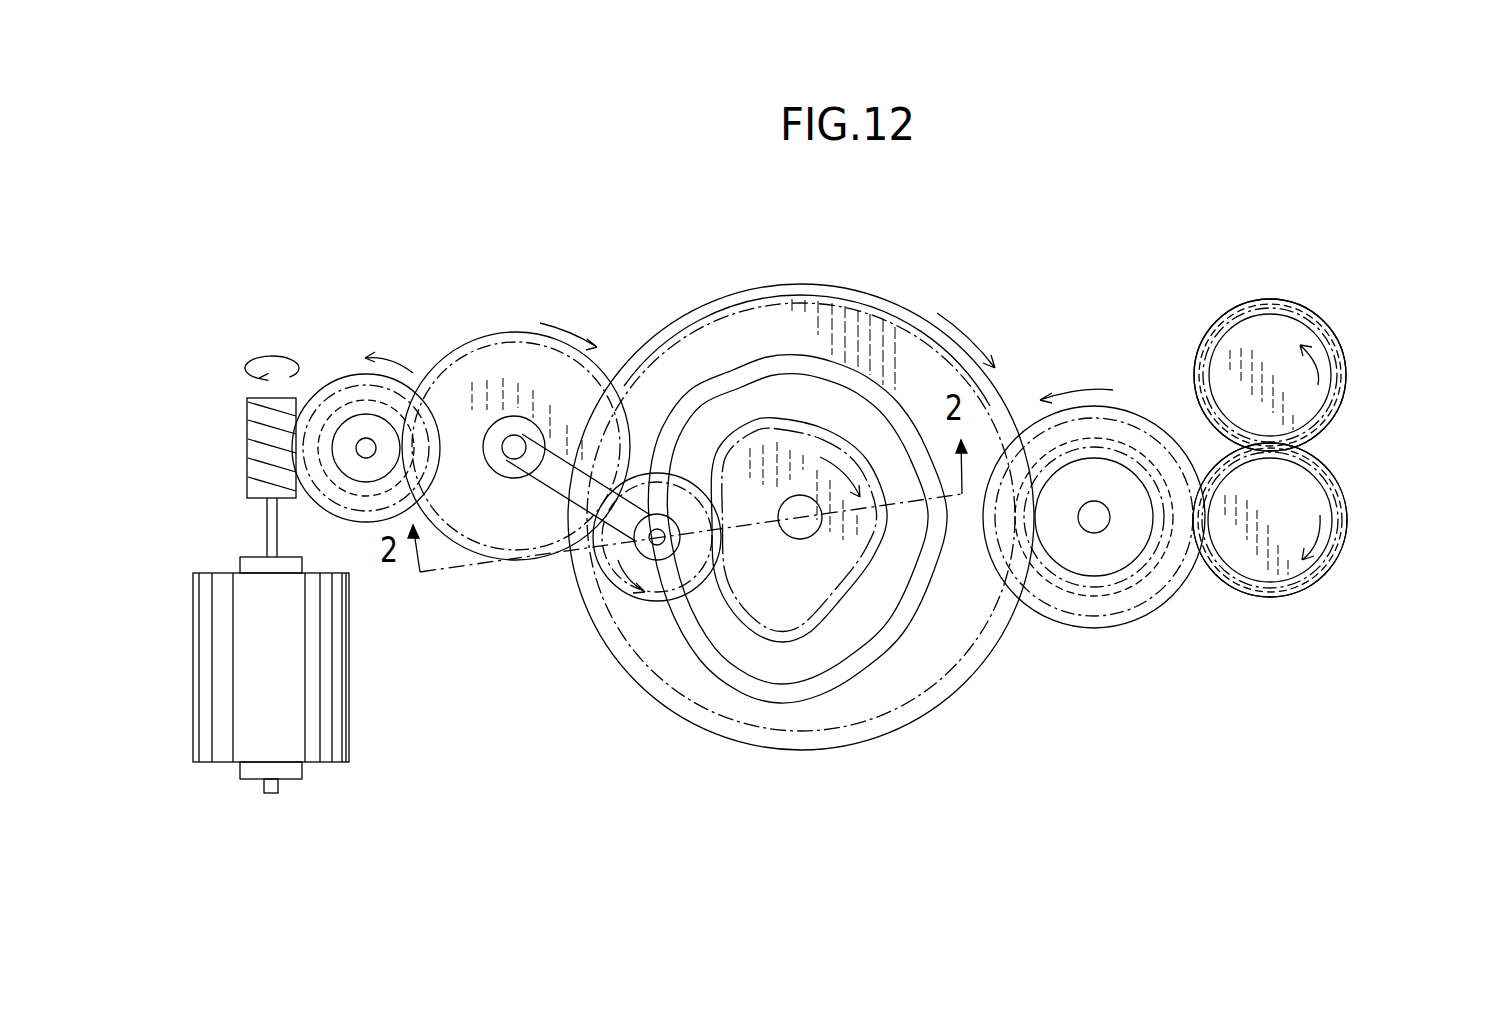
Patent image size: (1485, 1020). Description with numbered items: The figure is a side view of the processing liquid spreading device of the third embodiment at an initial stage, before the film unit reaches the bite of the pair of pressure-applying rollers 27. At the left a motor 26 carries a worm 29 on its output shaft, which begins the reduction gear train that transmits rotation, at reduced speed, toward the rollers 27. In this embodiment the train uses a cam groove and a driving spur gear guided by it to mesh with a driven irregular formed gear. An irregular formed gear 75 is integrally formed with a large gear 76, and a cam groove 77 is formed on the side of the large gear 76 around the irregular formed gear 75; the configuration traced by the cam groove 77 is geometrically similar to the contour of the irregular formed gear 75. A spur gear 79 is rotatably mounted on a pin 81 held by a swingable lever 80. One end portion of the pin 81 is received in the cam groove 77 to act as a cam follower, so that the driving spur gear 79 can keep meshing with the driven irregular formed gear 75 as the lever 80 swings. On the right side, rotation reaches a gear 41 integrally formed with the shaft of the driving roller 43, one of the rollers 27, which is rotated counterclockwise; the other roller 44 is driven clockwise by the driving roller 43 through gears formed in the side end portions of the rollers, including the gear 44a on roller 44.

The motor 26 is at (333, 720).
The worm 29 is at (258, 455).
The swingable lever 80 is at (558, 488).
The pin 81 is at (690, 578).
The spur gear 79 is at (625, 600).
The large gear 76 is at (706, 289).
The cam groove 77 is at (828, 699).
The irregular formed gear 75 is at (757, 638).
The pair of pressure-applying rollers 27 is at (1416, 388).
The gear 44a is at (1318, 318).
The roller 44 is at (1343, 388).
The driving roller 43 is at (1343, 507).
The gear 41 is at (1318, 585).